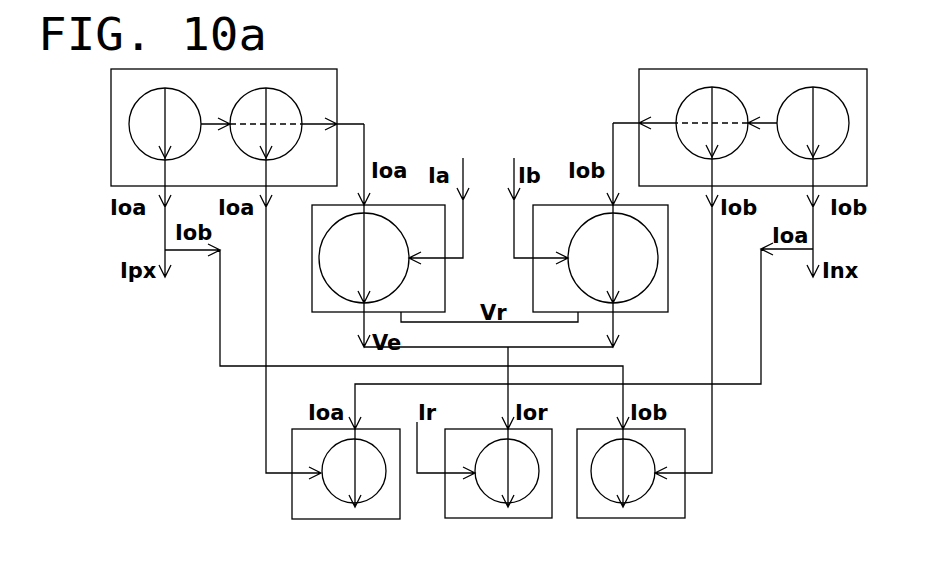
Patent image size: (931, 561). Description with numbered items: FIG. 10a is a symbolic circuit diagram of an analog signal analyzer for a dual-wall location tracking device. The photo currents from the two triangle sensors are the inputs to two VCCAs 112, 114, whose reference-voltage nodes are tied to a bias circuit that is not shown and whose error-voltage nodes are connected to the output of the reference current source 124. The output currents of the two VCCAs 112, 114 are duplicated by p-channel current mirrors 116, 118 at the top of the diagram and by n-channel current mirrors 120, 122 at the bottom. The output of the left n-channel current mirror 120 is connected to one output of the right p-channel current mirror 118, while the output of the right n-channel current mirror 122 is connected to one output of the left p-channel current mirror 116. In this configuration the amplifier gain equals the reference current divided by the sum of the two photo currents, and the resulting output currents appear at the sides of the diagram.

The VCCA 112 is at (405, 210).
The VCCA 114 is at (568, 218).
The p-channel current mirror 116 is at (335, 82).
The p-channel current mirror 118 is at (652, 85).
The n-channel current mirror 120 is at (310, 508).
The n-channel current mirror 122 is at (678, 493).
The reference current source 124 is at (476, 514).